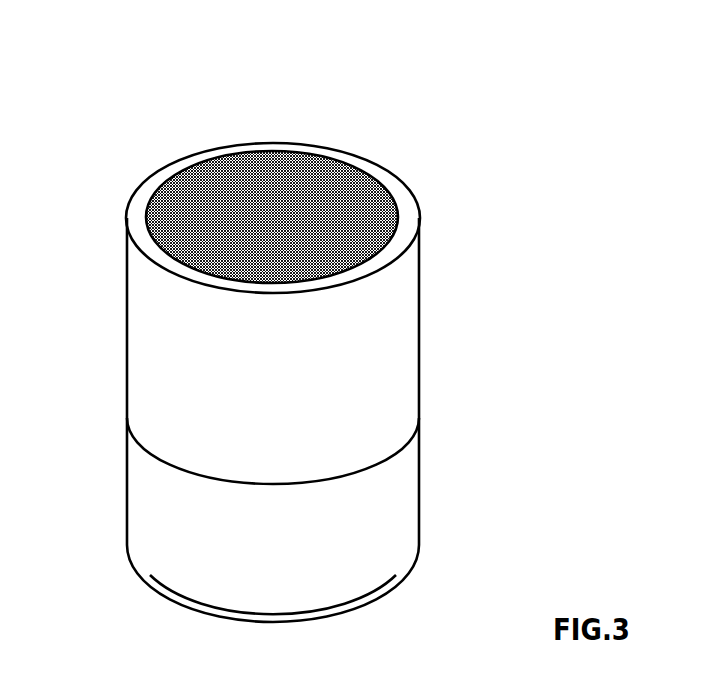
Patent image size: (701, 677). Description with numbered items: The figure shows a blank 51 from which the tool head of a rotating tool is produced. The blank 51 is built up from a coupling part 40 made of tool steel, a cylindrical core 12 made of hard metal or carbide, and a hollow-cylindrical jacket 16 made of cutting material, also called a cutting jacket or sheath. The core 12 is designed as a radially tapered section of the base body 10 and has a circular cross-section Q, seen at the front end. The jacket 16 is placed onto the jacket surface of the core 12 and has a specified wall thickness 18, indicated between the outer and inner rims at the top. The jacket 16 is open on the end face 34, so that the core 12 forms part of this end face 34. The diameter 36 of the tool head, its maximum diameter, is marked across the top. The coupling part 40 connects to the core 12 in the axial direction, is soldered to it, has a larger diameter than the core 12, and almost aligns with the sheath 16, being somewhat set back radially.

The base body 10 is at (279, 313).
The core 12 is at (377, 188).
The jacket 16 is at (397, 348).
The wall thickness 18 is at (220, 232).
The end face 34 is at (382, 230).
The diameter 36 is at (393, 176).
The coupling part 40 is at (408, 503).
The blank 51 is at (379, 104).